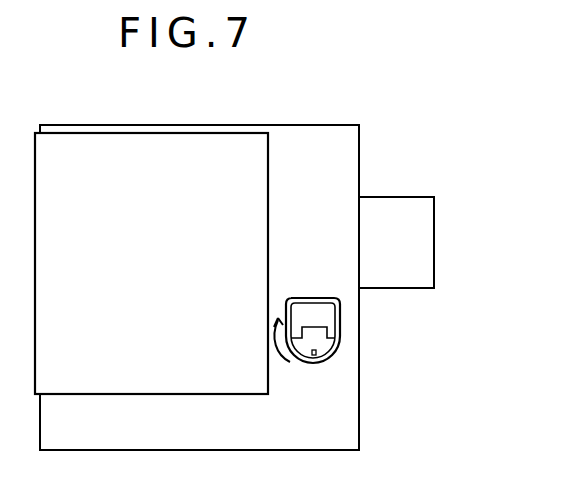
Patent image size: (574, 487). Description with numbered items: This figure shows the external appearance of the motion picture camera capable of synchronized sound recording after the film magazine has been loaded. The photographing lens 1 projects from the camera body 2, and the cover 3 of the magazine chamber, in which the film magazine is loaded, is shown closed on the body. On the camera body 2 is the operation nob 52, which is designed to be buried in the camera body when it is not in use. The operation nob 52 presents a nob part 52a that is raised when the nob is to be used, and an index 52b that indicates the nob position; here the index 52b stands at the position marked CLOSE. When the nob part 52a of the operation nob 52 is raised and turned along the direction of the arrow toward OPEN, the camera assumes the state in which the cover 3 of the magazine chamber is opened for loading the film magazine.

The photographing lens 1 is at (392, 198).
The camera body 2 is at (312, 132).
The cover of the magazine chamber 3 is at (225, 148).
The operation nob 52 is at (347, 344).
The nob part 52a is at (325, 312).
The index 52b is at (316, 352).